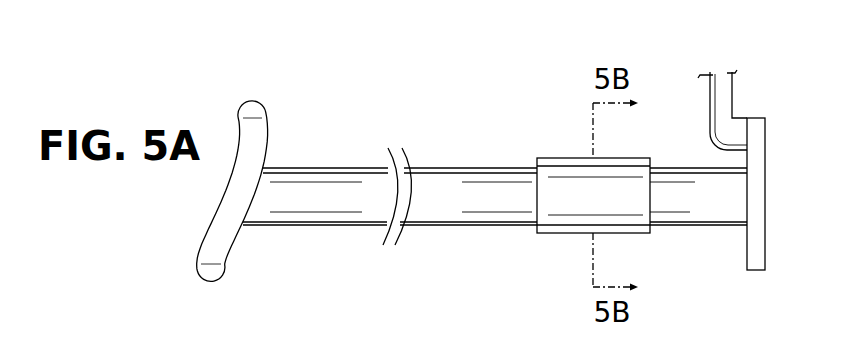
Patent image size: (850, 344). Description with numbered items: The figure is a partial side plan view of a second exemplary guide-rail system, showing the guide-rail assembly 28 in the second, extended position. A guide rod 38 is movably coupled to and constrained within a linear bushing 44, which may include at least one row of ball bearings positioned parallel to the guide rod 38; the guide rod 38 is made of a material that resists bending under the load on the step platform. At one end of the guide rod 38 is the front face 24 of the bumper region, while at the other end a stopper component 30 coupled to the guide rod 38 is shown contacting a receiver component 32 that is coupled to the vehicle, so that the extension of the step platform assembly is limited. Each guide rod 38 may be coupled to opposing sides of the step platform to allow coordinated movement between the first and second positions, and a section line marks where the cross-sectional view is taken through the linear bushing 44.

The front face 24 is at (217, 197).
The guide-rail assembly 28 is at (538, 150).
The stopper component 30 is at (765, 195).
The receiver component 32 is at (732, 97).
The guide rod 38 is at (481, 197).
The linear bushing 44 is at (563, 158).